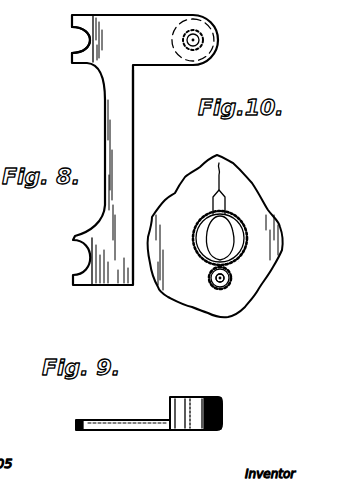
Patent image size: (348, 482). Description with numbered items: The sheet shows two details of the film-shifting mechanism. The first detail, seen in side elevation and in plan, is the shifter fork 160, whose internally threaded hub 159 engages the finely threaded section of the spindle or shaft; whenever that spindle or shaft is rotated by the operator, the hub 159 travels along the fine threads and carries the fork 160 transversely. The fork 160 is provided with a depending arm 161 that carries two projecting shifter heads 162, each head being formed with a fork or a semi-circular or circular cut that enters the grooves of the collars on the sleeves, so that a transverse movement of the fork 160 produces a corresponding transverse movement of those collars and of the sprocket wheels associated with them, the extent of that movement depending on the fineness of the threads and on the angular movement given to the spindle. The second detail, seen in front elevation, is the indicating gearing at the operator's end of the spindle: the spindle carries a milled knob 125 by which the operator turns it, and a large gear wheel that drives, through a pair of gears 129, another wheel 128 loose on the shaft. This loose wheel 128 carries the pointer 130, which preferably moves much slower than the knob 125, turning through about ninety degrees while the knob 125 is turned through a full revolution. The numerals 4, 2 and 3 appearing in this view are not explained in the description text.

In FIG. 8, the shifter fork 160 is at (105, 133).
In FIG. 9, the shifter fork 160 is at (146, 430).
In FIG. 8, the depending arm 161 is at (134, 125).
In FIG. 8, the shifter heads 162 is at (83, 40).
In FIG. 8, the hub 159 is at (214, 40).
In FIG. 9, the hub 159 is at (222, 419).
In FIG. 10, the ring gear 4 is at (194, 236).
In FIG. 10, the opening 2 is at (244, 243).
In FIG. 10, the pointer 130 is at (226, 204).
In FIG. 10, the wheel 128 is at (211, 260).
In FIG. 10, the milled knob 125 is at (238, 261).
In FIG. 10, the pinion 3 is at (220, 289).
In FIG. 10, the pair of gears 129 is at (231, 283).